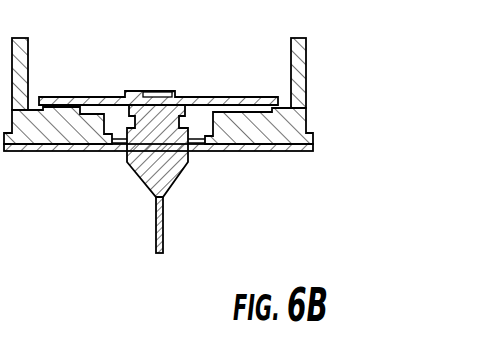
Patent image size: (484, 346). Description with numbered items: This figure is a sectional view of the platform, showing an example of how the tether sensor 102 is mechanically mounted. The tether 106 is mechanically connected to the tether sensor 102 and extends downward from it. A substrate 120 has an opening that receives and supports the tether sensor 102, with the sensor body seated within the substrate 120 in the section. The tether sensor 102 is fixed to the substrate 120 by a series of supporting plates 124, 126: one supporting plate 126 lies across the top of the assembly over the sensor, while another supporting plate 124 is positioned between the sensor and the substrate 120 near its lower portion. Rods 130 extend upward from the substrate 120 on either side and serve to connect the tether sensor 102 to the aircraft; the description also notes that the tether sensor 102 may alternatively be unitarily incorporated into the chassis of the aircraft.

The tether sensor 102 is at (152, 163).
The tether 106 is at (163, 230).
The substrate 120 is at (311, 135).
The supporting plate 124 is at (209, 139).
The supporting plate 126 is at (213, 98).
The rod 130 is at (28, 63).